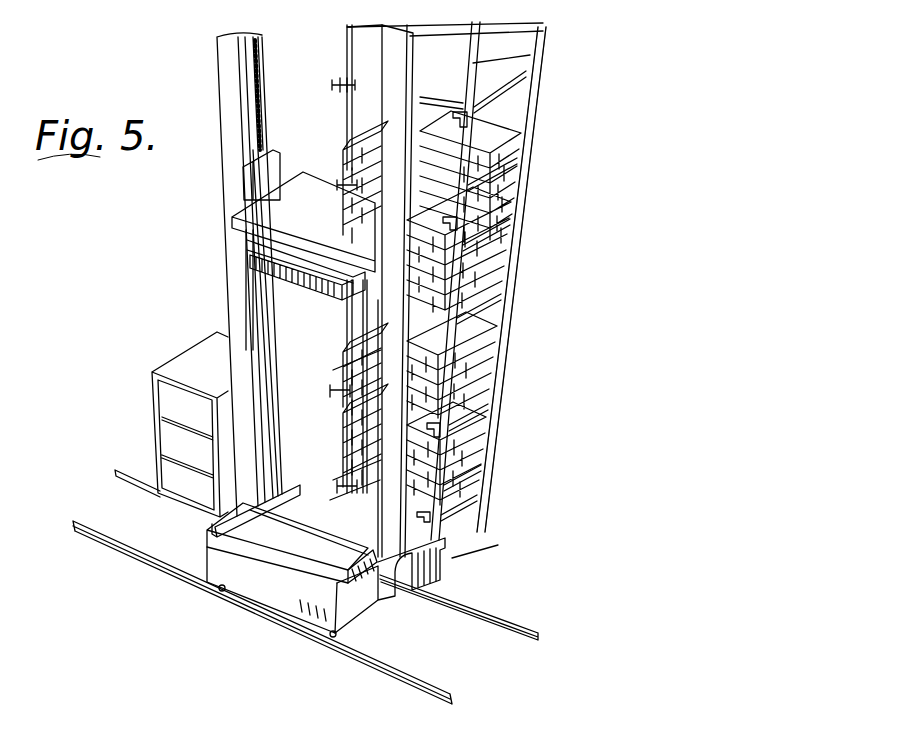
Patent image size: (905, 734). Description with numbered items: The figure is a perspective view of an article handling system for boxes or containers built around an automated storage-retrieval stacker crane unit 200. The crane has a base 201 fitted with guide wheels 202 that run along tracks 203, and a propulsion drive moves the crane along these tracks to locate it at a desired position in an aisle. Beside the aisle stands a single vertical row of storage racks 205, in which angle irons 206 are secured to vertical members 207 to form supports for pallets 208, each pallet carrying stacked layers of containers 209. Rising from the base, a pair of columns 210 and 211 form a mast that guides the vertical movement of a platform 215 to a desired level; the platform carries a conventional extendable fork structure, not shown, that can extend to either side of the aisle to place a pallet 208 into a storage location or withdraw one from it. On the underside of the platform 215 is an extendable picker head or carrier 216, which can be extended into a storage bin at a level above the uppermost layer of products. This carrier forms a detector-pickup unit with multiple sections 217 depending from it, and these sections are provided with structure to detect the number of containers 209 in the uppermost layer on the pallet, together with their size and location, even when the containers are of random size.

The stacker crane unit 200 is at (463, 561).
The base 201 is at (290, 603).
The guide wheels 202 is at (407, 583).
The tracks 203 is at (413, 675).
The storage racks 205 is at (484, 281).
The angle irons 206 is at (485, 487).
The vertical members 207 is at (522, 222).
The pallets 208 is at (497, 381).
The containers 209 is at (483, 332).
The column 210 is at (232, 142).
The column 211 is at (405, 47).
The platform 215 is at (247, 228).
The picker head or carrier 216 is at (293, 268).
The sections 217 is at (244, 276).